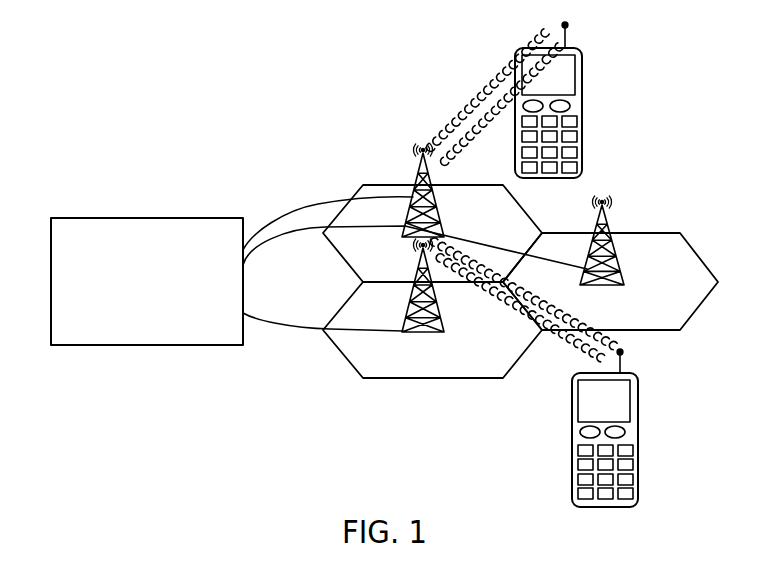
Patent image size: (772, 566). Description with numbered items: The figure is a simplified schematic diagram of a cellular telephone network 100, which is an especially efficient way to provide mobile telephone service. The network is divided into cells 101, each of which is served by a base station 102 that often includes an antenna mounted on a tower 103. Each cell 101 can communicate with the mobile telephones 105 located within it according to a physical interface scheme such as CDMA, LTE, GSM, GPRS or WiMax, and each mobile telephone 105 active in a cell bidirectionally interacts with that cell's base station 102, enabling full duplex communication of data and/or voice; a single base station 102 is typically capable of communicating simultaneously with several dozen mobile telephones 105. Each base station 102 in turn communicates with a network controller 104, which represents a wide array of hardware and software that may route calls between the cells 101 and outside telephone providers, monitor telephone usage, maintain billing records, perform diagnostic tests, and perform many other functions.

The cellular telephone network 100 is at (113, 87).
The cell 101 is at (368, 193).
The base station 102 is at (443, 230).
The tower 103 is at (413, 180).
The network controller 104 is at (72, 218).
The mobile telephone 105 is at (582, 70).